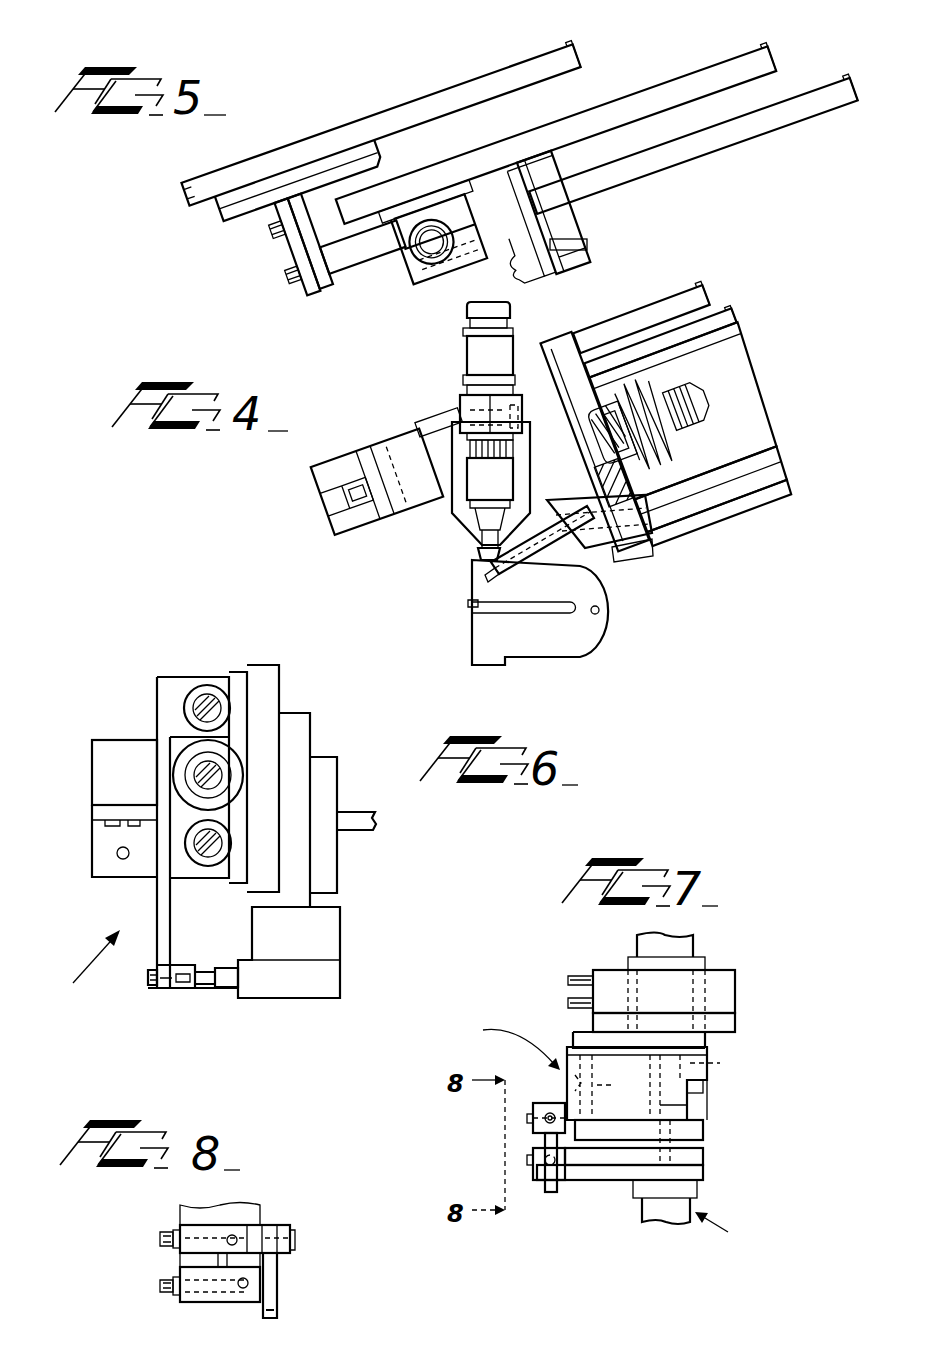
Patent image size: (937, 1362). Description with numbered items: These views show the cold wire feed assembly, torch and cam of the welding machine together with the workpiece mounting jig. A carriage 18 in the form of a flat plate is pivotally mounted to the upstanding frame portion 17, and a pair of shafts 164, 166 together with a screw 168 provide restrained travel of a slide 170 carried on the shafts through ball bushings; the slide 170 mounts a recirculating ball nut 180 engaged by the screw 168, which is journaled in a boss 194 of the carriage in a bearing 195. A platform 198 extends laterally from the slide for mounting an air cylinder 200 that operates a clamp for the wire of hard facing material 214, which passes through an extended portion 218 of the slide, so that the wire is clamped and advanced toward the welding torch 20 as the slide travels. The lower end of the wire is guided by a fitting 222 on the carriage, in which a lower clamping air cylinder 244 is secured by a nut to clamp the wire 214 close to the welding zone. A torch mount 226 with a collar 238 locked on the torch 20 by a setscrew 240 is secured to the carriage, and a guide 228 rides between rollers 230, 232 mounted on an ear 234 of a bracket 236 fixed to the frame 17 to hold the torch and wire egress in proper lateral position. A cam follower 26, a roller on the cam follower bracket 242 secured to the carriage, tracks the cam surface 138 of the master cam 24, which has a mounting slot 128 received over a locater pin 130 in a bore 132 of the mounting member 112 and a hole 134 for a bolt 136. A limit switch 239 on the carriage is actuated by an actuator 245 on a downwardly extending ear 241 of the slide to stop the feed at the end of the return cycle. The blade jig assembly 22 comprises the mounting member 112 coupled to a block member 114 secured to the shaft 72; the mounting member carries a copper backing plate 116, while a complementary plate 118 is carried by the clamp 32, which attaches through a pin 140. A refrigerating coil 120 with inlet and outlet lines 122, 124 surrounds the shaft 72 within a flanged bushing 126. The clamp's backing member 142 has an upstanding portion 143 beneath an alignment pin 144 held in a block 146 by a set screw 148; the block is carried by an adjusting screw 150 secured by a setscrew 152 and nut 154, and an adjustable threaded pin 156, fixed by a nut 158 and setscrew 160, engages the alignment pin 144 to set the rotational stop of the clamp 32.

In FIG. 5, the upstanding frame portion 17 is at (477, 77).
In FIG. 5, the carriage 18 is at (664, 84).
In FIG. 4, the carriage 18 is at (433, 420).
In FIG. 6, the carriage 18 is at (287, 713).
In FIG. 5, the welding torch 20 is at (410, 246).
In FIG. 4, the welding torch 20 is at (515, 347).
In FIG. 7, the blade jig assembly 22 is at (511, 1046).
In FIG. 4, the master cam 24 is at (614, 623).
In FIG. 4, the cam follower 26 is at (478, 570).
In FIG. 7, the cam follower 26 is at (712, 1052).
In FIG. 7, the clamp 32 is at (693, 1212).
In FIG. 7, the shaft 72 is at (698, 947).
In FIG. 7, the mounting member 112 is at (689, 1110).
In FIG. 7, the block member 114 is at (713, 1036).
In FIG. 7, the copper backing plate 116 is at (704, 1132).
In FIG. 7, the complementary plate 118 is at (707, 1158).
In FIG. 7, the refrigerating coil 120 is at (680, 983).
In FIG. 7, the inlet line 122 is at (578, 980).
In FIG. 7, the outlet line 124 is at (575, 993).
In FIG. 7, the flanged bushing 126 is at (735, 1018).
In FIG. 4, the mounting slot 128 is at (470, 604).
In FIG. 7, the locater pin 130 is at (704, 1082).
In FIG. 7, the bore 132 is at (665, 1090).
In FIG. 4, the hole 134 is at (600, 608).
In FIG. 7, the bolt 136 is at (703, 1090).
In FIG. 4, the cam surface 138 is at (566, 657).
In FIG. 7, the pin 140 is at (706, 1143).
In FIG. 7, the backing member 142 is at (620, 1180).
In FIG. 7, the upstanding portion 143 is at (540, 1180).
In FIG. 8, the upstanding portion 143 is at (197, 1303).
In FIG. 7, the alignment pin 144 is at (565, 1180).
In FIG. 8, the alignment pin 144 is at (275, 1290).
In FIG. 7, the block 146 is at (537, 1106).
In FIG. 8, the block 146 is at (272, 1225).
In FIG. 8, the set screw 148 is at (290, 1240).
In FIG. 8, the adjusting screw 150 is at (160, 1238).
In FIG. 7, the setscrew 152 is at (527, 1120).
In FIG. 8, the setscrew 152 is at (233, 1235).
In FIG. 8, the nut 154 is at (175, 1232).
In FIG. 8, the adjustable threaded pin 156 is at (160, 1285).
In FIG. 8, the nut 158 is at (177, 1293).
In FIG. 8, the setscrew 160 is at (243, 1286).
In FIG. 5, the shaft 164 is at (812, 93).
In FIG. 4, the shaft 164 is at (735, 327).
In FIG. 6, the shaft 164 is at (205, 697).
In FIG. 4, the shaft 166 is at (748, 457).
In FIG. 6, the shaft 166 is at (205, 862).
In FIG. 4, the screw 168 is at (713, 407).
In FIG. 6, the screw 168 is at (197, 772).
In FIG. 6, the slide 170 is at (74, 962).
In FIG. 6, the recirculating ball nut 180 is at (183, 763).
In FIG. 4, the boss 194 is at (590, 400).
In FIG. 4, the bearing 195 is at (607, 418).
In FIG. 6, the platform 198 is at (98, 818).
In FIG. 6, the air cylinder 200 is at (100, 764).
In FIG. 4, the wire of hard facing material 214 is at (688, 502).
In FIG. 6, the extended portion 218 is at (113, 862).
In FIG. 5, the fitting 222 is at (513, 248).
In FIG. 4, the fitting 222 is at (630, 545).
In FIG. 5, the torch mount 226 is at (410, 272).
In FIG. 4, the torch mount 226 is at (466, 382).
In FIG. 5, the guide 228 is at (352, 250).
In FIG. 4, the guide 228 is at (383, 450).
In FIG. 5, the roller 230 is at (328, 275).
In FIG. 4, the roller 230 is at (405, 518).
In FIG. 5, the roller 232 is at (278, 222).
In FIG. 5, the ear 234 is at (305, 293).
In FIG. 5, the bracket 236 is at (337, 186).
In FIG. 5, the collar 238 is at (467, 270).
In FIG. 4, the collar 238 is at (541, 350).
In FIG. 6, the limit switch 239 is at (283, 985).
In FIG. 5, the setscrew 240 is at (458, 258).
In FIG. 4, the setscrew 240 is at (458, 403).
In FIG. 6, the ear 241 is at (157, 940).
In FIG. 4, the cam follower bracket 242 is at (462, 524).
In FIG. 4, the lower clamping air cylinder 244 is at (575, 477).
In FIG. 4, the actuator 245 is at (587, 550).
In FIG. 6, the actuator 245 is at (183, 988).